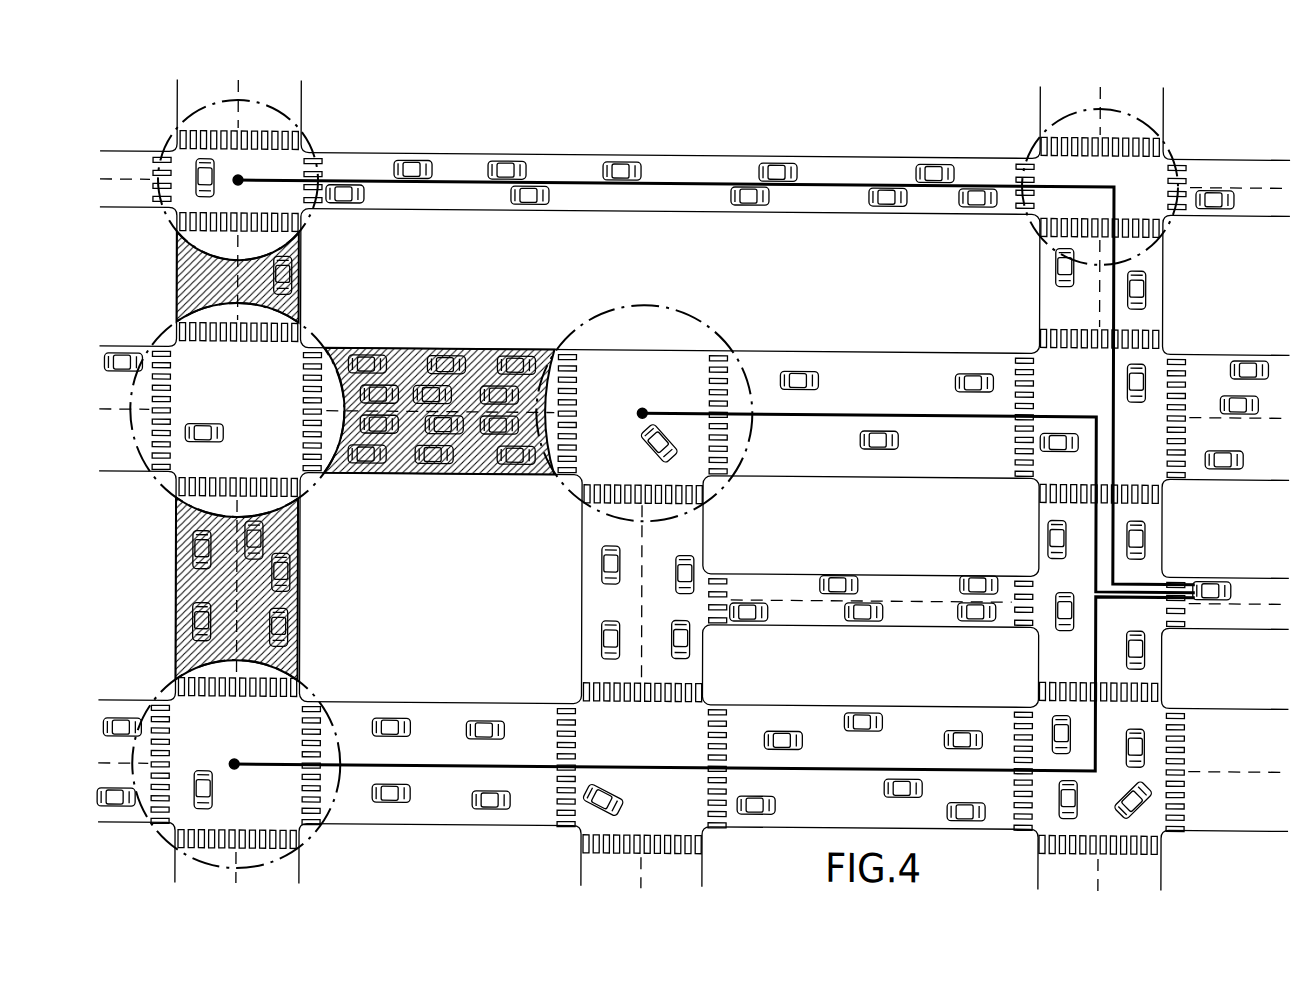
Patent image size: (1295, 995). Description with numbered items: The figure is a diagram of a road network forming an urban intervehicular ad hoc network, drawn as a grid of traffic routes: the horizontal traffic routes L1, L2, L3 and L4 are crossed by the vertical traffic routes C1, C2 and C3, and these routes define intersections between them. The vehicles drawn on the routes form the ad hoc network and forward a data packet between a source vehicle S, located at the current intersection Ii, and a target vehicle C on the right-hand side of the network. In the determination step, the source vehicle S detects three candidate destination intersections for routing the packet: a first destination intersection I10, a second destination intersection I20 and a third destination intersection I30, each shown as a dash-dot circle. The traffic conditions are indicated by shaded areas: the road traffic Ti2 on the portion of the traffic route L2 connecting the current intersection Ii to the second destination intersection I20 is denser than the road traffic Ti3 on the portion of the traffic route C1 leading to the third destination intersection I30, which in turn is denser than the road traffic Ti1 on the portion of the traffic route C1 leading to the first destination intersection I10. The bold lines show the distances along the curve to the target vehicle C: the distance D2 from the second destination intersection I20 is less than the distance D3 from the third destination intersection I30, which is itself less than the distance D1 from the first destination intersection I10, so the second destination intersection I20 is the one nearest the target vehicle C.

The traffic route L1 is at (121, 152).
The traffic route L2 is at (121, 347).
The traffic route L3 is at (121, 701).
The fourth link (road) L4 is at (1266, 568).
The traffic route C1 is at (302, 100).
The traffic route C2 is at (1165, 98).
The traffic route C3 is at (705, 866).
The target vehicle C is at (1211, 573).
The distance along the curve D1 is at (844, 178).
The distance along the curve D2 is at (890, 408).
The distance along the curve D3 is at (646, 763).
The first destination intersection I10 is at (309, 227).
The second destination intersection I20 is at (702, 298).
The third destination intersection I30 is at (322, 665).
The current intersection Ii is at (319, 321).
The road traffic Ti1 is at (196, 284).
The road traffic Ti2 is at (411, 357).
The road traffic Ti3 is at (276, 603).
The source vehicle S is at (205, 423).